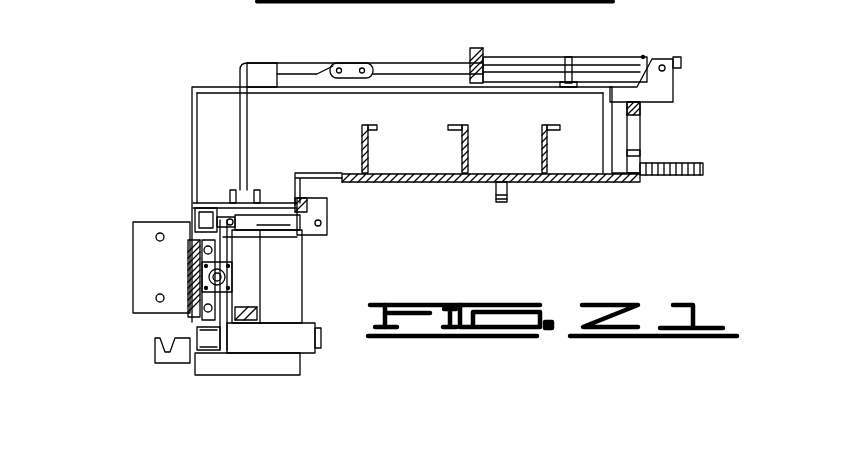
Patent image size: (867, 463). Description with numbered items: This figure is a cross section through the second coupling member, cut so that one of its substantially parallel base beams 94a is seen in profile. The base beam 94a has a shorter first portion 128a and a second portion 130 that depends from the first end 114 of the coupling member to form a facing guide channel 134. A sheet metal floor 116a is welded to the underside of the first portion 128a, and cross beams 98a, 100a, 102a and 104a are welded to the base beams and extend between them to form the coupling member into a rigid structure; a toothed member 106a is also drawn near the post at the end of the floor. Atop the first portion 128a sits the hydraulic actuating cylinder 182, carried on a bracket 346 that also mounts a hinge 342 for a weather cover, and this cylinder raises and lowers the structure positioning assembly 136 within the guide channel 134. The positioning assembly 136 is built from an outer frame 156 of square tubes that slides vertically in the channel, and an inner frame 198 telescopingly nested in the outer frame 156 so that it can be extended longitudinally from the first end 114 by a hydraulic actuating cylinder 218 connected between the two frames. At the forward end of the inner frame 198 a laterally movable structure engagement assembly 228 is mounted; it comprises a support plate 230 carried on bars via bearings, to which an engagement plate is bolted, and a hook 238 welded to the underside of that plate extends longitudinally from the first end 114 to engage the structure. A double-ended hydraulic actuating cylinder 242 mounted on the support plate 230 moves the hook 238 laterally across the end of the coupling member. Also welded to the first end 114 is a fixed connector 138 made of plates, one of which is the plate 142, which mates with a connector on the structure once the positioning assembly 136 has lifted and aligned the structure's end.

The first end 114 is at (190, 100).
The first portion 128a is at (440, 119).
The sheet metal floor 116a is at (582, 184).
The cross beam 98a is at (360, 146).
The cross beam 100a is at (460, 143).
The cross beam 102a is at (541, 142).
The base beam 94a is at (409, 162).
The hydraulic actuating cylinder 182 is at (680, 0).
The hinge 342 is at (681, 57).
The bracket 346 is at (661, 88).
The cross beam 104a is at (642, 108).
The toothed bar 106a is at (641, 158).
The outer frame 156 is at (229, 205).
The hydraulic actuating cylinder 218 is at (297, 234).
The fixed connector 138 is at (131, 233).
The plate 142 is at (178, 284).
The support plate 230 is at (184, 316).
The structure engagement assembly 228 is at (187, 322).
The double-ended hydraulic actuating cylinder 242 is at (232, 277).
The second portion 130 is at (277, 310).
The structure positioning assembly 136 is at (252, 340).
The inner frame 198 is at (324, 343).
The guide channel 134 is at (222, 377).
The hook 238 is at (174, 360).